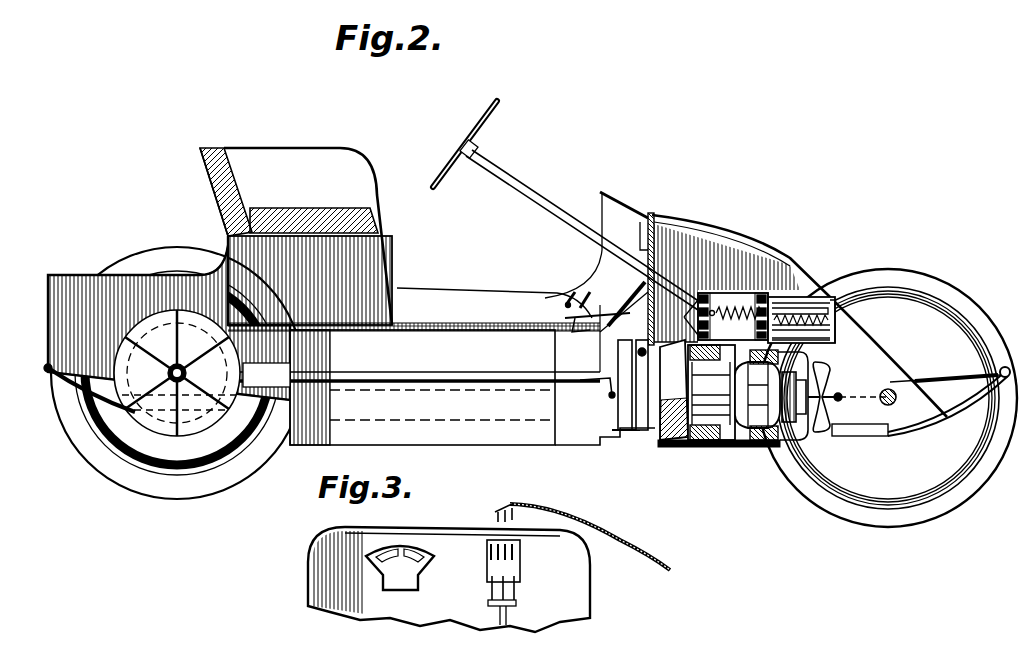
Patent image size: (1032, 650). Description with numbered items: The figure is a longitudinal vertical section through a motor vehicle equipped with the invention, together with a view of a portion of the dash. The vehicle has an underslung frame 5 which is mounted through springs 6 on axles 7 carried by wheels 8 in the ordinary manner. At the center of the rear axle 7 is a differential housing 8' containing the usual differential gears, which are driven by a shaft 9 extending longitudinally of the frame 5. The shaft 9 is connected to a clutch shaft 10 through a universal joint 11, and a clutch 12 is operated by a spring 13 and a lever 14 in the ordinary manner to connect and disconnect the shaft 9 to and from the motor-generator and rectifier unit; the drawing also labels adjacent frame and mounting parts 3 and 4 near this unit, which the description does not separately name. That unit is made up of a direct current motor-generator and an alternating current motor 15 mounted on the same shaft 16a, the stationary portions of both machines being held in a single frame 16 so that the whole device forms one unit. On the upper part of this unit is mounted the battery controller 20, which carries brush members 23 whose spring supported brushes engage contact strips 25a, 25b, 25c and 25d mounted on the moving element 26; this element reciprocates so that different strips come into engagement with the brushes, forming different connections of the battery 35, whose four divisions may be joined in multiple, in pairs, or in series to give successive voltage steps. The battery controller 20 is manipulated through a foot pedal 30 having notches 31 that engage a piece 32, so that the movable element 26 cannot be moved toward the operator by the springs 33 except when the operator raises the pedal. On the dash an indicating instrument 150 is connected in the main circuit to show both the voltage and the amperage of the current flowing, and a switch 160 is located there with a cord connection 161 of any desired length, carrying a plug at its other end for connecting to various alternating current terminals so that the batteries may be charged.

In FIG. 2, the frame bracket 3 is at (625, 432).
In FIG. 2, the motor end plate 4 is at (674, 390).
In FIG. 2, the frame 5 is at (581, 432).
In FIG. 2, the springs 6 is at (110, 420).
In FIG. 2, the axles 7 is at (846, 450).
In FIG. 2, the wheels 8 is at (534, 387).
In FIG. 2, the differential housing 8' is at (200, 337).
In FIG. 2, the shaft 9 is at (440, 380).
In FIG. 2, the clutch shaft 10 is at (646, 432).
In FIG. 2, the universal joint 11 is at (586, 378).
In FIG. 2, the clutch 12 is at (668, 445).
In FIG. 2, the spring 13 is at (740, 452).
In FIG. 2, the lever 14 is at (764, 452).
In FIG. 2, the alternating current motor 15 is at (702, 442).
In FIG. 2, the frame 16 is at (754, 455).
In FIG. 2, the shaft 16a is at (730, 448).
In FIG. 2, the battery controller 20 is at (735, 310).
In FIG. 2, the brush members 23 is at (722, 293).
In FIG. 2, the contact strip 25a is at (820, 335).
In FIG. 2, the contact strip 25b is at (848, 308).
In FIG. 2, the contact strip 25c is at (838, 333).
In FIG. 2, the contact strip 25d is at (838, 345).
In FIG. 2, the moving element 26 is at (800, 320).
In FIG. 2, the foot pedal 30 is at (566, 304).
In FIG. 2, the notches 31 is at (632, 300).
In FIG. 2, the piece 32 is at (565, 318).
In FIG. 2, the springs 33 is at (770, 325).
In FIG. 2, the battery 35 is at (301, 340).
In FIG. 3, the indicating instrument 150 is at (425, 576).
In FIG. 3, the switch 160 is at (530, 565).
In FIG. 3, the cord connection 161 is at (605, 523).